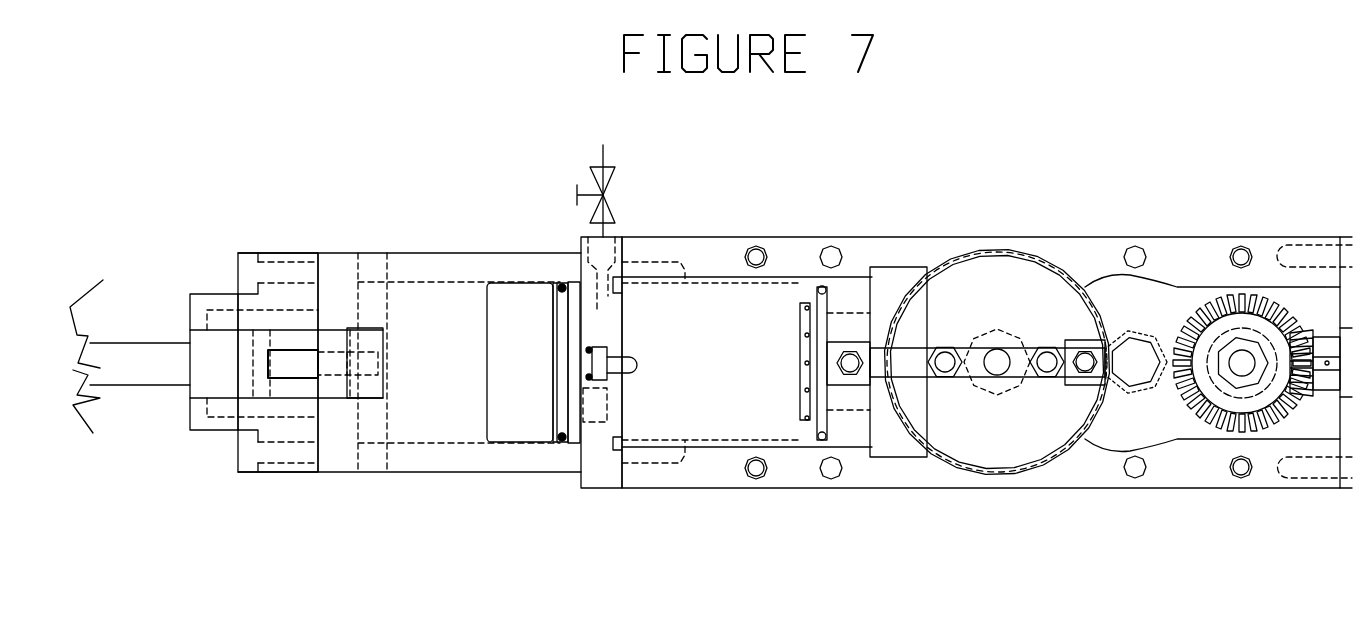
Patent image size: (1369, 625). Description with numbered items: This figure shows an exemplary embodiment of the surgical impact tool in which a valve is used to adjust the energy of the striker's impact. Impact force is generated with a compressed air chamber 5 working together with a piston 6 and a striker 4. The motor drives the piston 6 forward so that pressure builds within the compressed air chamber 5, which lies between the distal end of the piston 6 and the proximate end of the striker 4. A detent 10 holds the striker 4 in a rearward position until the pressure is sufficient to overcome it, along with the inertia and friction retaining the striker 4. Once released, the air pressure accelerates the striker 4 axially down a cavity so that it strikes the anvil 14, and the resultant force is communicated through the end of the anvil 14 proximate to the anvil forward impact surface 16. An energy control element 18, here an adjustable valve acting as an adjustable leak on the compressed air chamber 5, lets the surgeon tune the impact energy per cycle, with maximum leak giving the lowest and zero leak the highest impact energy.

The anvil 14 is at (100, 363).
The anvil forward impact surface 16 is at (388, 352).
The energy control element 18 is at (617, 208).
The striker 4 is at (525, 423).
The detent 10 is at (598, 415).
The compressed air chamber 5 is at (688, 337).
The piston 6 is at (860, 300).